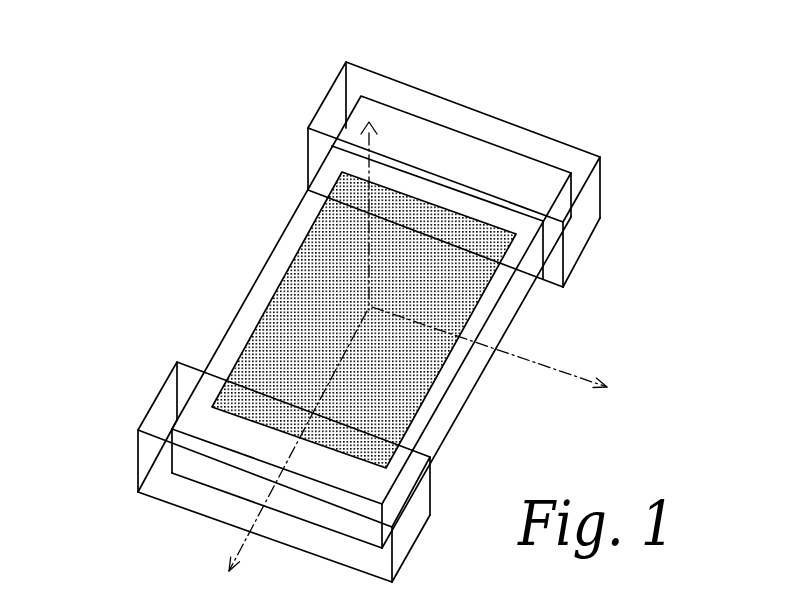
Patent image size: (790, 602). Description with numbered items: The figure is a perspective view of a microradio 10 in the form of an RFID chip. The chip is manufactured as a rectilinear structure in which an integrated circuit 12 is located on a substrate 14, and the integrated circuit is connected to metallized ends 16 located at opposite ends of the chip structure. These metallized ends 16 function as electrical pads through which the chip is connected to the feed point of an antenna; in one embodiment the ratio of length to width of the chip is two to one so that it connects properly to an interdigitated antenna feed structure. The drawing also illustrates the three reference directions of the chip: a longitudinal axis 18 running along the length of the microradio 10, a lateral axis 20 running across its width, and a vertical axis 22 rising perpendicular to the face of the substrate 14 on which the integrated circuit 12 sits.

The microradio 10 is at (535, 107).
The integrated circuit 12 is at (295, 292).
The substrate 14 is at (453, 395).
The metallized end 16 is at (437, 110).
The longitudinal axis 18 is at (237, 550).
The lateral axis 20 is at (555, 368).
The vertical axis 22 is at (367, 139).